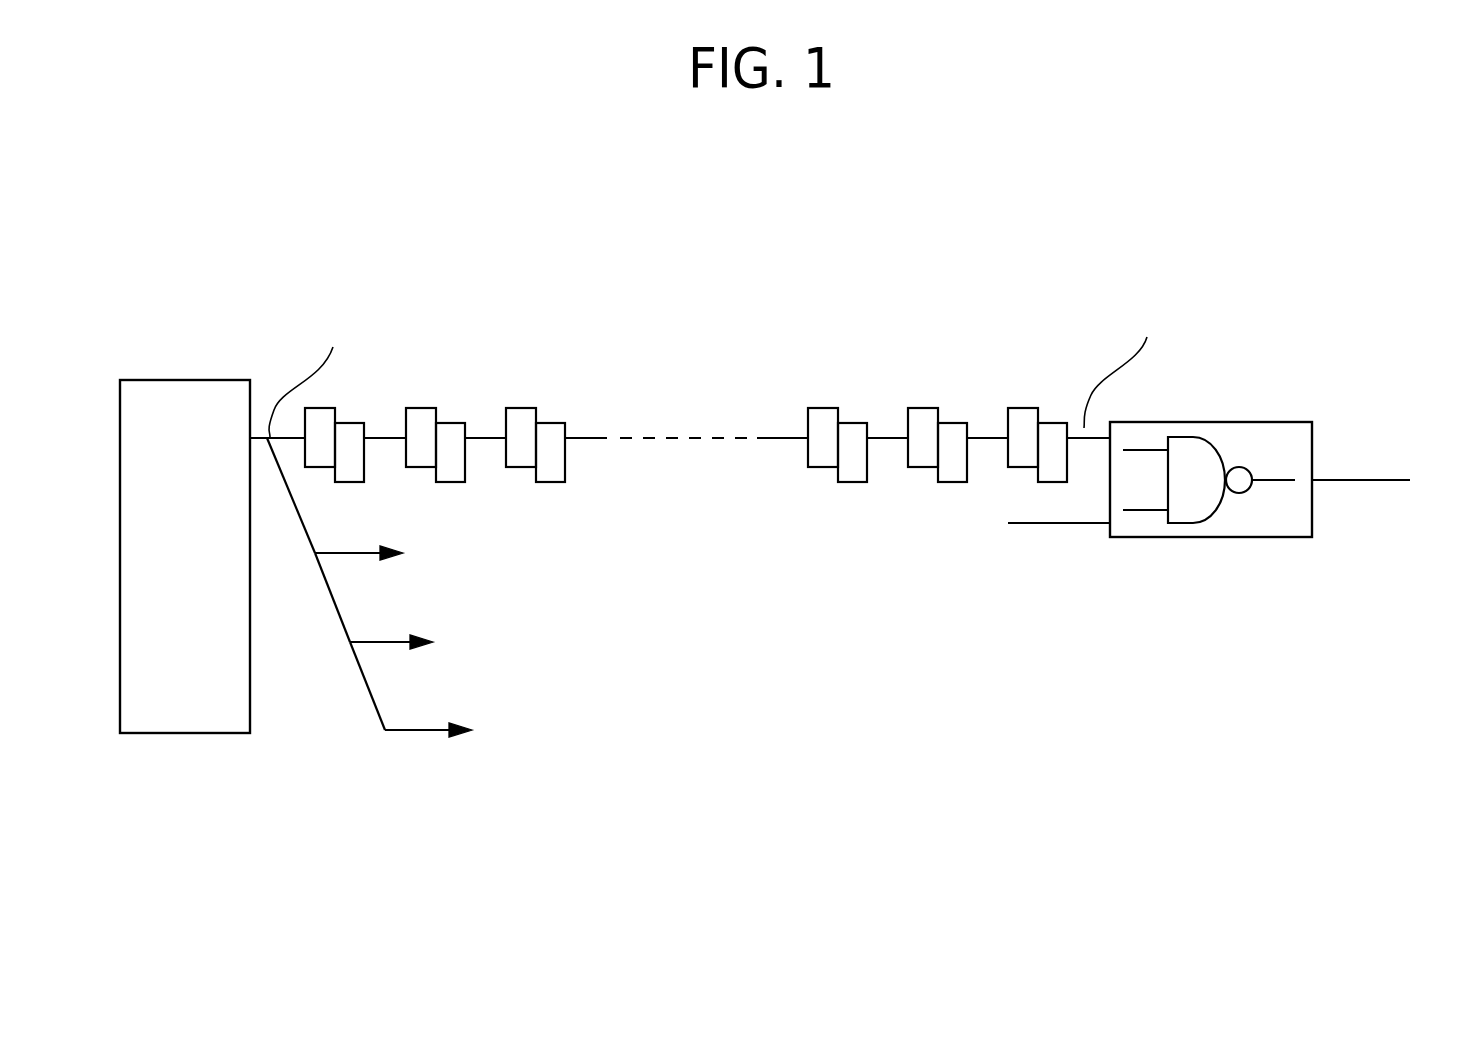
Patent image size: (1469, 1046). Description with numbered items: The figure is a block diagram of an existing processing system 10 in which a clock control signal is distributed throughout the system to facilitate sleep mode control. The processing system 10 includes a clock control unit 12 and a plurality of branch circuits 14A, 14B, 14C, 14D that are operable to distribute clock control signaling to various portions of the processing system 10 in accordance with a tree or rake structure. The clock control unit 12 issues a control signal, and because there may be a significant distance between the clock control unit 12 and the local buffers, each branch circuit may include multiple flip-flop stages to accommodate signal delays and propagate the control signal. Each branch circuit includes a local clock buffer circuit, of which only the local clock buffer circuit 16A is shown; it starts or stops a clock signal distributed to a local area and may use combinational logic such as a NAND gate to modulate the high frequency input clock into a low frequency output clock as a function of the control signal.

The processing system 10 is at (785, 194).
The clock control unit 12 is at (185, 556).
The branch circuit 14A is at (657, 422).
The branch circuit 14B is at (374, 504).
The branch circuit 14C is at (420, 606).
The branch circuit 14D is at (454, 695).
The local clock buffer circuit 16A is at (1168, 464).